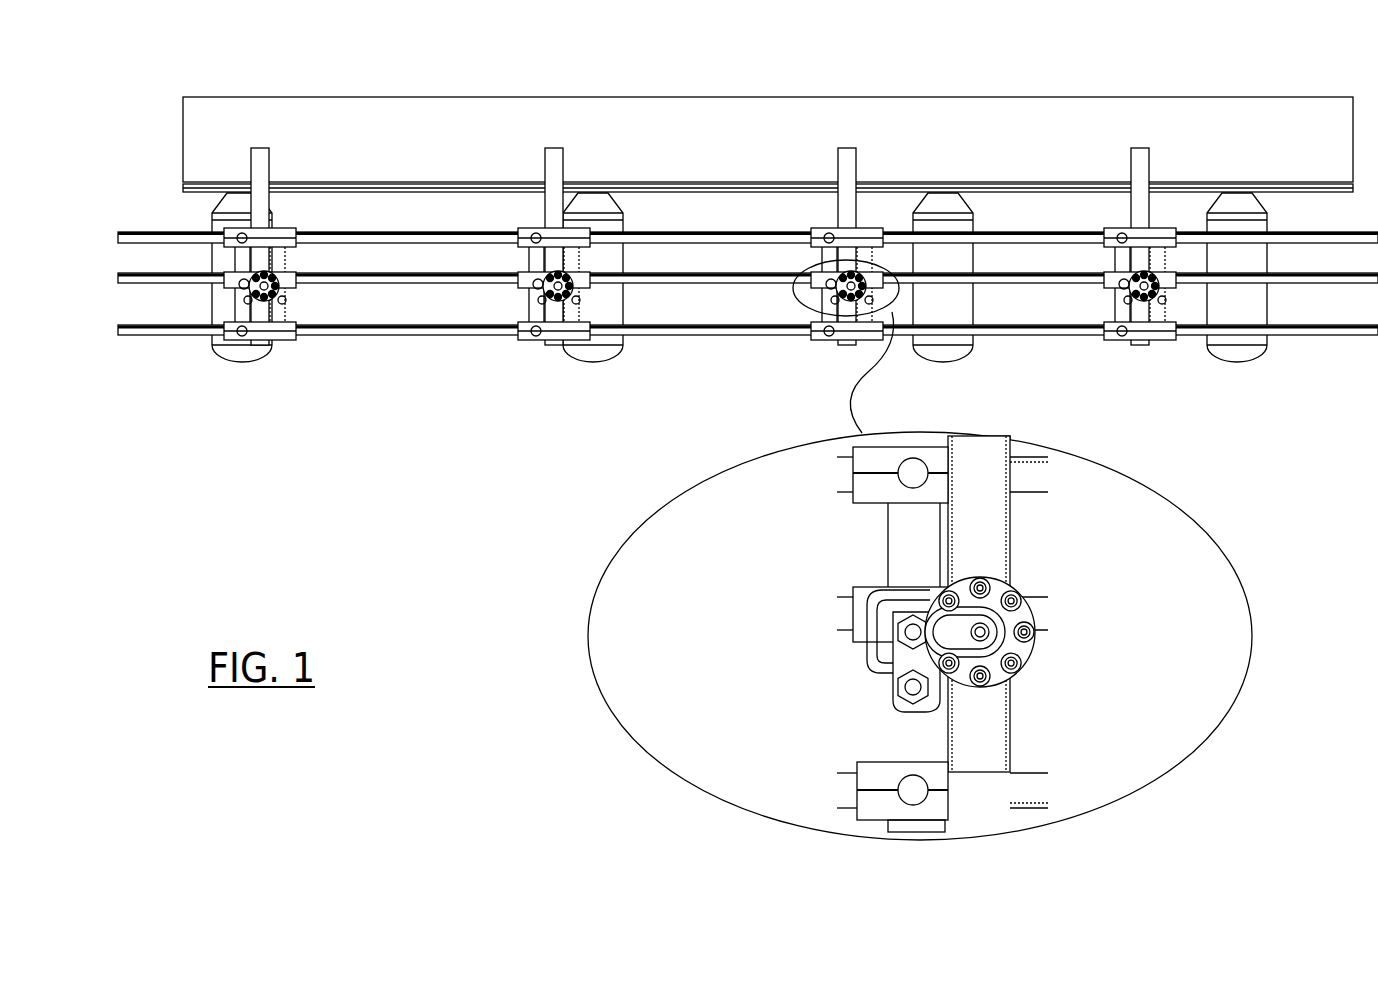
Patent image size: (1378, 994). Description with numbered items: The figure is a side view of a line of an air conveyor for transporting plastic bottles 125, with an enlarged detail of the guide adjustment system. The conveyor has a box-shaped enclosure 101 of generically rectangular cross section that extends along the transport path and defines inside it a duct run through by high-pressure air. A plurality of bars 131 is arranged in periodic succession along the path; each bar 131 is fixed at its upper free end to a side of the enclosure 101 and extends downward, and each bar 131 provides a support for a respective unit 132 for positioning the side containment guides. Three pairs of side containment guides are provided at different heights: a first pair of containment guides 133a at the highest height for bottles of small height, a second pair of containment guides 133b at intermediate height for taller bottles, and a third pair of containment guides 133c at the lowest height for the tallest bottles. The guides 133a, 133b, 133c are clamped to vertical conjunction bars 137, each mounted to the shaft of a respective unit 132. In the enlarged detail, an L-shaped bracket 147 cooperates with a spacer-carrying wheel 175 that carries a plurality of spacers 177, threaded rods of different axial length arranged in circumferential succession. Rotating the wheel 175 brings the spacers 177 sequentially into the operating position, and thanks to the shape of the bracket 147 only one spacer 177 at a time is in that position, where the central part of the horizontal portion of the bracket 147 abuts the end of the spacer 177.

The box-shaped enclosure 101 is at (932, 97).
The bottles 125 is at (238, 364).
The bar 131 is at (265, 172).
The unit for the positioning of side containment guides 132 is at (963, 668).
The first pair of containment guides 133a is at (1057, 245).
The second pair of containment guides 133b is at (708, 280).
The third pair of containment guides 133c is at (398, 338).
The vertical conjunction bar 137 is at (905, 537).
The L-shaped bracket 147 is at (898, 660).
The spacer-carrying wheel 175 is at (1030, 650).
The spacer 177 is at (1020, 596).